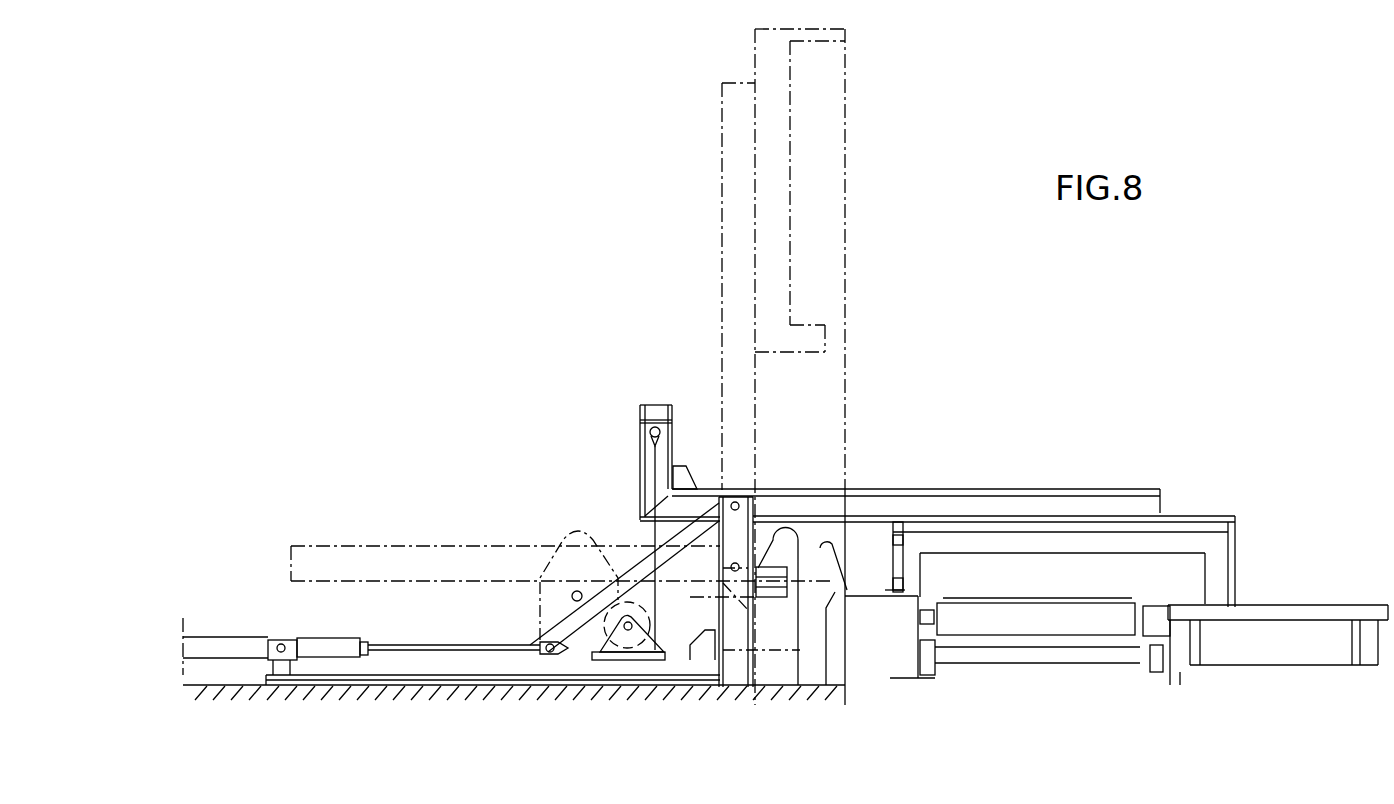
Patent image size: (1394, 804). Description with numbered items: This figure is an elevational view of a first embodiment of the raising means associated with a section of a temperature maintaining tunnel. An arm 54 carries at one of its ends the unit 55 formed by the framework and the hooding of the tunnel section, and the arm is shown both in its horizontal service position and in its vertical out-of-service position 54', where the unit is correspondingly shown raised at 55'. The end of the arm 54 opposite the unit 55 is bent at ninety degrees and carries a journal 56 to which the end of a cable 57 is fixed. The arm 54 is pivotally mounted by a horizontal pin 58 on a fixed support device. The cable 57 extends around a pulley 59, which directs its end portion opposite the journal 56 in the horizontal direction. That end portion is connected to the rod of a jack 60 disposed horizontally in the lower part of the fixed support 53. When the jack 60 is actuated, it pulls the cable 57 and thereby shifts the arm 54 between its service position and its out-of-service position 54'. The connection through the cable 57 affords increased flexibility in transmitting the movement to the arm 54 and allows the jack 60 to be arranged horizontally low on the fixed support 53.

The fixed support 53 is at (741, 675).
The arm 54 is at (953, 486).
The out of service position of the arm 54' is at (711, 286).
The unit formed by the framework and the hooding of the tunnel section 55 is at (1136, 600).
The out of service position of the unit 55' is at (800, 367).
The journal 56 is at (657, 419).
The cable 57 is at (655, 478).
The horizontal pin 58 is at (737, 497).
The pulley 59 is at (646, 621).
The jack 60 is at (325, 640).